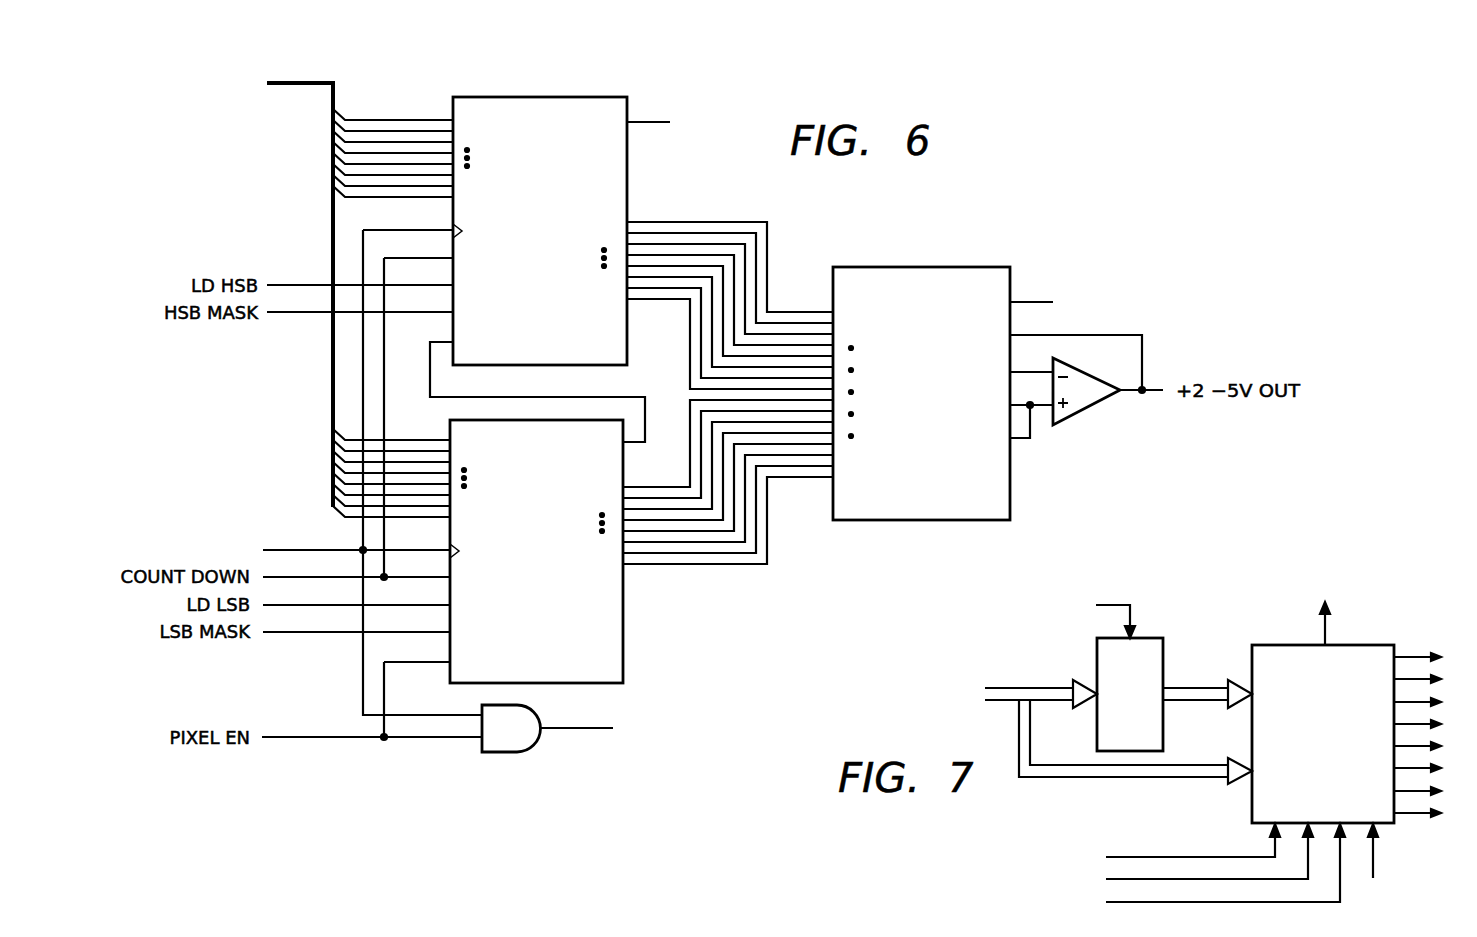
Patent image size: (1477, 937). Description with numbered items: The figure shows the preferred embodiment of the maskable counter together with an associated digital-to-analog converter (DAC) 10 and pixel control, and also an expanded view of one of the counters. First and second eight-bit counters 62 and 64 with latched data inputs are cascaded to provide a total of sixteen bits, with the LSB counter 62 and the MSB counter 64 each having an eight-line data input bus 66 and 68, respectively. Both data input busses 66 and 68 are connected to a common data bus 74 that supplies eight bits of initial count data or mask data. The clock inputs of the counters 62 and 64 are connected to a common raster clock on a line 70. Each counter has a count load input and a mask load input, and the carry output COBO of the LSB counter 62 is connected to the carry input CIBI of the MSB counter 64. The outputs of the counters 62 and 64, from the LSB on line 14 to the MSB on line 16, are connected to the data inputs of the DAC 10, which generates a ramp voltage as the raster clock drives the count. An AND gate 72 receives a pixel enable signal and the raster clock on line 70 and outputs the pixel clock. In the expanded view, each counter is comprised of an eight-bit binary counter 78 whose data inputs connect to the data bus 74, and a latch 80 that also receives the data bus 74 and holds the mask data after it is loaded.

In FIG. 6, the digital-to-analog converter (DAC) 10 is at (922, 267).
In FIG. 6, the LSB line 14 is at (710, 566).
In FIG. 6, the MSB line 16 is at (712, 221).
In FIG. 6, the LSB counter 62 is at (623, 637).
In FIG. 6, the MSB counter 64 is at (543, 97).
In FIG. 6, the data input bus 66 is at (417, 527).
In FIG. 6, the data input bus 68 is at (398, 207).
In FIG. 6, the raster clock line 70 is at (286, 550).
In FIG. 6, the AND gate 72 is at (505, 753).
In FIG. 6, the data bus 74 is at (290, 86).
In FIG. 7, the data bus 74 is at (1054, 688).
In FIG. 7, the eight-bit binary counter 78 is at (1332, 777).
In FIG. 7, the latch 80 is at (1143, 734).